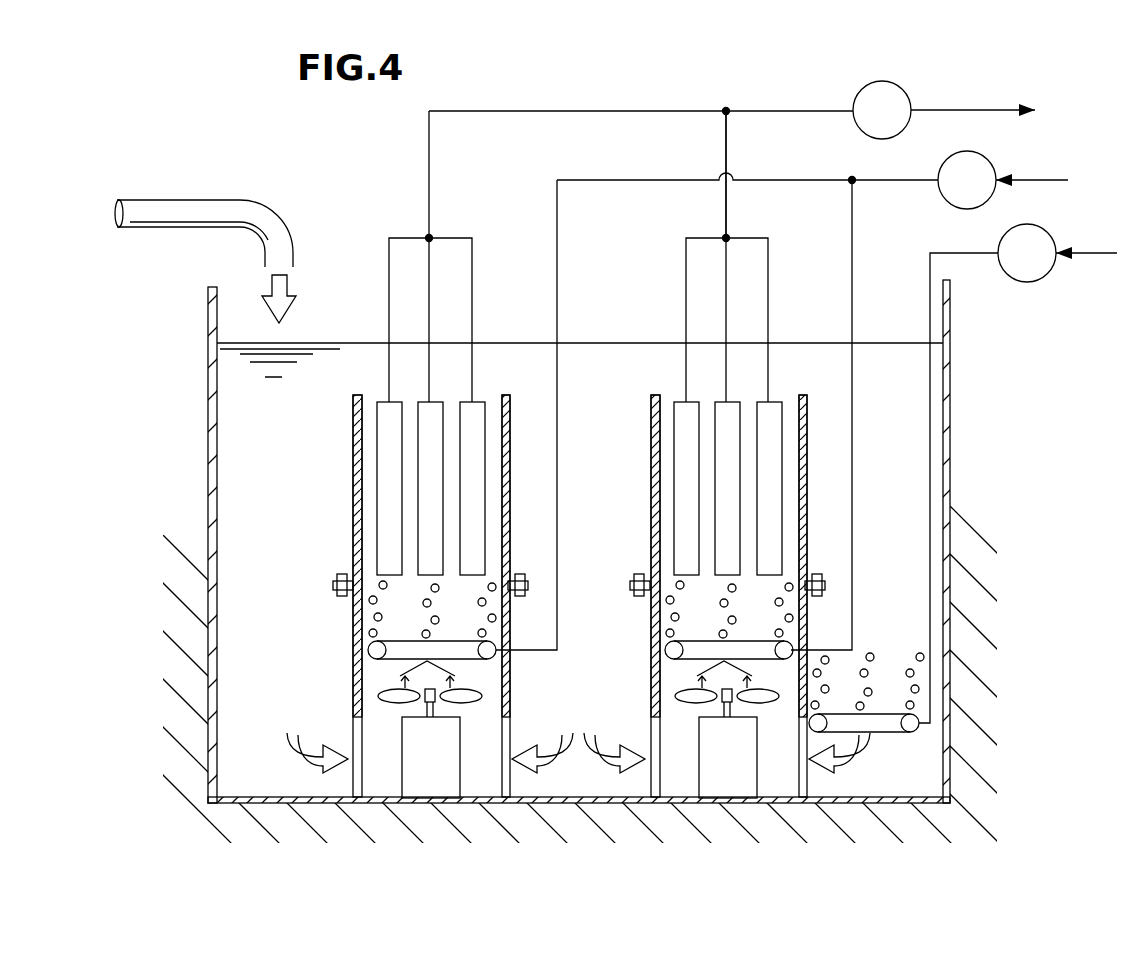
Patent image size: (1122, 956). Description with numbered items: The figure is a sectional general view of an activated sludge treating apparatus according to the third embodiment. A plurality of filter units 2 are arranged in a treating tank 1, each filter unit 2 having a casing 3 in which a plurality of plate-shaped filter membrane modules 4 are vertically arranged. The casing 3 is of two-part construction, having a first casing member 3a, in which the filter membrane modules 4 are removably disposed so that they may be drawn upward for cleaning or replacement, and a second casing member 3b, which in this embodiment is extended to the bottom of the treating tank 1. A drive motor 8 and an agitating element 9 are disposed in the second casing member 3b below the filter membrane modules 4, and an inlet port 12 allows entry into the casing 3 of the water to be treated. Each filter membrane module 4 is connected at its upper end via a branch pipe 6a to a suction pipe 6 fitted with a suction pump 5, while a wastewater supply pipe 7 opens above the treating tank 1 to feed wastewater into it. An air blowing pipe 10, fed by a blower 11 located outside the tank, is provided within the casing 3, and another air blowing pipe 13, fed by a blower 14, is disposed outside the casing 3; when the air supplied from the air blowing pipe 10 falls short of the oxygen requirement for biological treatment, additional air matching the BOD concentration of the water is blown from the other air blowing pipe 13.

The treating tank 1 is at (208, 438).
The filter unit 2 is at (348, 452).
The casing 3 is at (290, 522).
The first casing member 3a is at (353, 492).
The second casing member 3b is at (353, 668).
The filter membrane module 4 is at (437, 397).
The suction pump 5 is at (858, 90).
The suction pipe 6 is at (797, 110).
The branch pipe 6a is at (722, 150).
The wastewater supply pipe 7 is at (256, 203).
The drive motor 8 is at (428, 790).
The agitating element 9 is at (396, 697).
The air blowing pipe 10 is at (390, 661).
The blower 11 is at (980, 153).
The inlet port 12 is at (506, 762).
The another air blowing pipe 13 is at (887, 734).
The blower 14 is at (1020, 282).